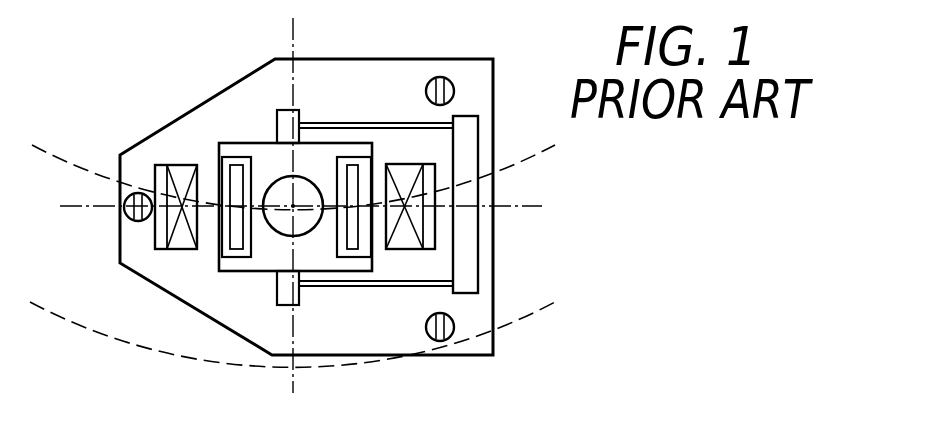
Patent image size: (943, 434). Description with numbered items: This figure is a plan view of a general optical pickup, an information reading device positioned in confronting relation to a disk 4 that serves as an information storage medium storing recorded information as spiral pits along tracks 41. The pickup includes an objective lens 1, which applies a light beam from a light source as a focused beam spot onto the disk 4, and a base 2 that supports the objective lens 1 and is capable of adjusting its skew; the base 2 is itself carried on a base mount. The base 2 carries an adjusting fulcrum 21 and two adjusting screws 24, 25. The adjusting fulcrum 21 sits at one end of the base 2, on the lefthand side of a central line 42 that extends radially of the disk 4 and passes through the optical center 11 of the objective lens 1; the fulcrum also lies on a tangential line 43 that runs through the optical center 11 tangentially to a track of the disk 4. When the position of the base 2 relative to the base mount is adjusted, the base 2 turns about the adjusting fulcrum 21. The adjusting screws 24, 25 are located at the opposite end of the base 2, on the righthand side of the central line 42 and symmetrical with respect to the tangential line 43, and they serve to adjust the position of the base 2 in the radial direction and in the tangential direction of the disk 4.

The objective lens 1 is at (272, 185).
The optical center 11 is at (296, 203).
The base 2 is at (493, 80).
The adjusting fulcrum 21 is at (134, 221).
The adjusting screw 24 is at (442, 77).
The adjusting screw 25 is at (446, 339).
The disk 4 is at (300, 280).
The tracks 41 is at (523, 153).
The central line 42 is at (293, 373).
The tangential line 43 is at (510, 208).